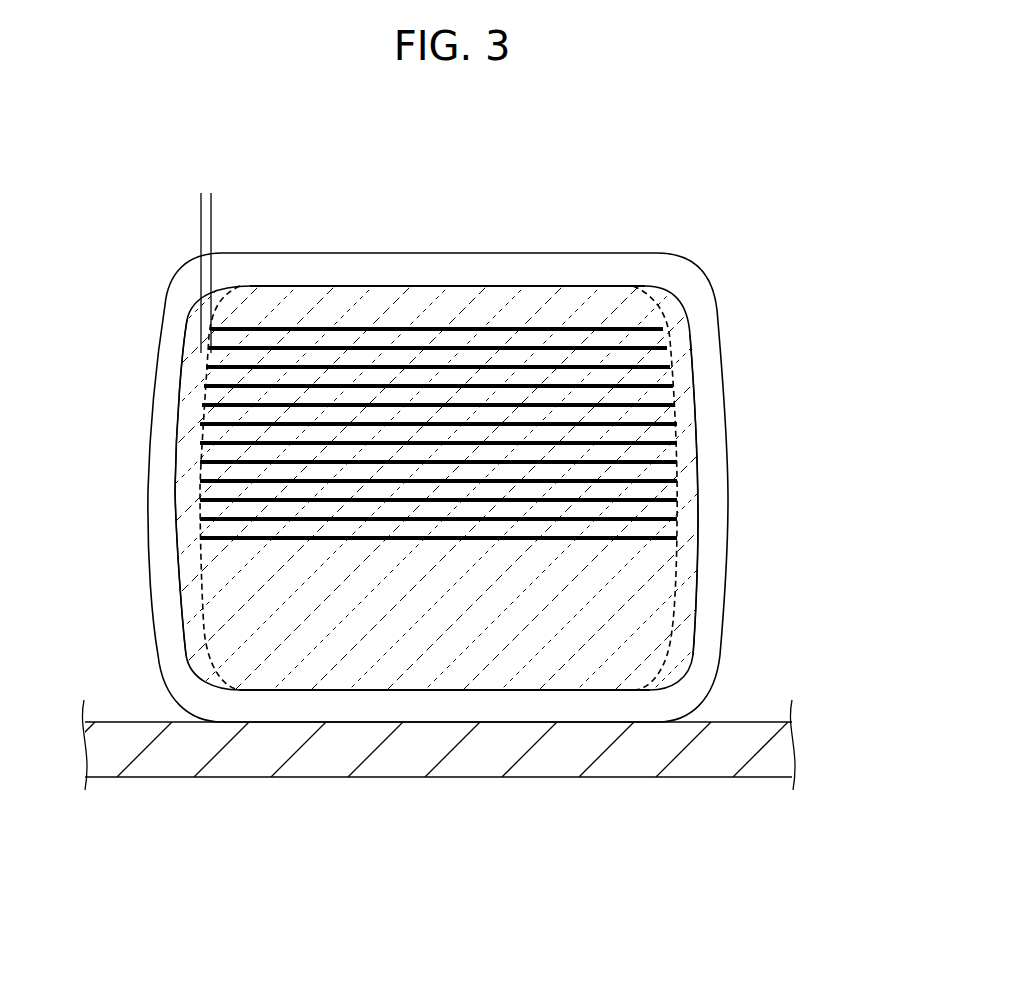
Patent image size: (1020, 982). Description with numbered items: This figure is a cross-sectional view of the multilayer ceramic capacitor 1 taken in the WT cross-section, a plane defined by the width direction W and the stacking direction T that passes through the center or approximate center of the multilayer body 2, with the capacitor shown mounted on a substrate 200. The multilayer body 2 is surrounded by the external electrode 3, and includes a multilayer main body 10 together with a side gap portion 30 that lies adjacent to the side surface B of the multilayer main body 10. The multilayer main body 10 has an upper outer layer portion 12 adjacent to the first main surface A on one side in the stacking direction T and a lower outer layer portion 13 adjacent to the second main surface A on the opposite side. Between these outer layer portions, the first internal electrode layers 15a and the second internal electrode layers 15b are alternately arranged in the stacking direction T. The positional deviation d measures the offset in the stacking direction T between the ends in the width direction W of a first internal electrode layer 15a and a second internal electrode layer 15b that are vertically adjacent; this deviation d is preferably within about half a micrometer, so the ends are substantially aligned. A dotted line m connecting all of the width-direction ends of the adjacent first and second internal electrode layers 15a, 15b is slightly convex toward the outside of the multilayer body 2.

The multilayer ceramic capacitor 1 is at (650, 126).
The multilayer body 2 is at (687, 171).
The external electrode 3 is at (525, 267).
The multilayer main body 10 is at (578, 284).
The upper outer layer portion 12 is at (353, 305).
The lower outer layer portion 13 is at (341, 672).
The first internal electrode layer 15a is at (207, 351).
The second internal electrode layer 15b is at (204, 369).
The side gap portion 30 is at (196, 432).
The substrate 200 is at (777, 752).
The line m is at (202, 592).
The positional deviation d is at (267, 203).
The main surface A is at (445, 287).
The side surface B is at (177, 485).
The stacking direction T is at (847, 268).
The width direction W is at (120, 852).